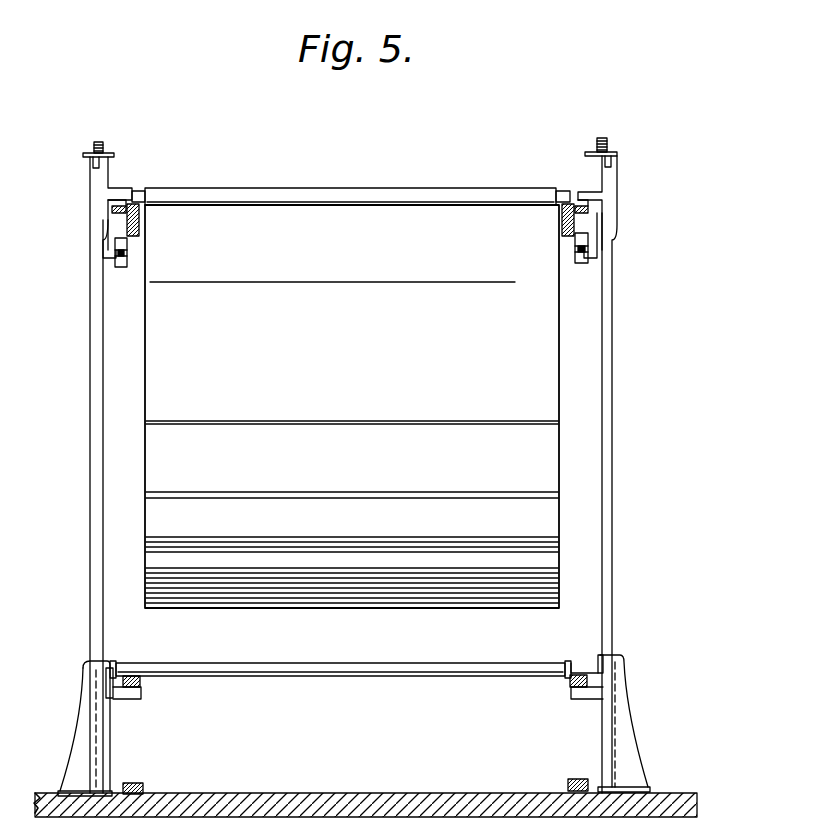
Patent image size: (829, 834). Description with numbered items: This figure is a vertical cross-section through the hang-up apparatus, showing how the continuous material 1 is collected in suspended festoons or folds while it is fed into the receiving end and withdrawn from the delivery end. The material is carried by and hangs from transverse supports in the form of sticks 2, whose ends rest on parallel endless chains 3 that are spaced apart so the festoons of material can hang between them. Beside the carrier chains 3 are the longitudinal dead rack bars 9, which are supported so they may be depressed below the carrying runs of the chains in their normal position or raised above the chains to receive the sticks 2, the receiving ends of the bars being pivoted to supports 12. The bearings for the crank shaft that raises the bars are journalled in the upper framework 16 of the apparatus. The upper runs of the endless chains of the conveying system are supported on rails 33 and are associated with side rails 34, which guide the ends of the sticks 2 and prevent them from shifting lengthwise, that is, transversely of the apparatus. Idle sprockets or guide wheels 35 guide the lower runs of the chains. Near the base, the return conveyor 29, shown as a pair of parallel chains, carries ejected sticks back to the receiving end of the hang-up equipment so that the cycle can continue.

The continuous material 1 is at (352, 406).
The sticks 2 is at (480, 198).
The endless chains 3 is at (118, 205).
The dead rack bars 9 is at (139, 236).
The supports 12 is at (139, 222).
The upper framework 16 is at (100, 140).
The return conveyor 29 is at (131, 676).
The rails 33 is at (120, 216).
The side rails 34 is at (108, 673).
The idle sprockets or guide wheels 35 is at (124, 268).